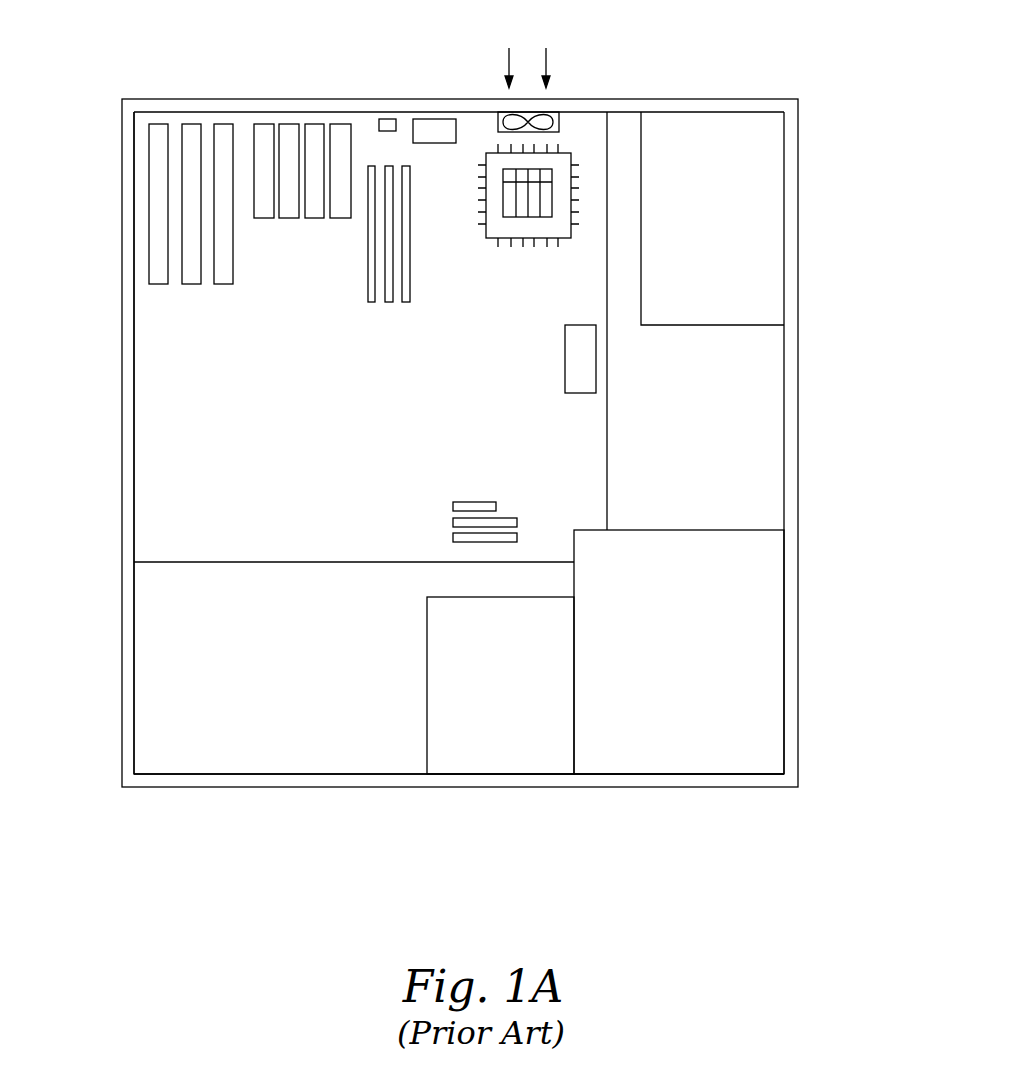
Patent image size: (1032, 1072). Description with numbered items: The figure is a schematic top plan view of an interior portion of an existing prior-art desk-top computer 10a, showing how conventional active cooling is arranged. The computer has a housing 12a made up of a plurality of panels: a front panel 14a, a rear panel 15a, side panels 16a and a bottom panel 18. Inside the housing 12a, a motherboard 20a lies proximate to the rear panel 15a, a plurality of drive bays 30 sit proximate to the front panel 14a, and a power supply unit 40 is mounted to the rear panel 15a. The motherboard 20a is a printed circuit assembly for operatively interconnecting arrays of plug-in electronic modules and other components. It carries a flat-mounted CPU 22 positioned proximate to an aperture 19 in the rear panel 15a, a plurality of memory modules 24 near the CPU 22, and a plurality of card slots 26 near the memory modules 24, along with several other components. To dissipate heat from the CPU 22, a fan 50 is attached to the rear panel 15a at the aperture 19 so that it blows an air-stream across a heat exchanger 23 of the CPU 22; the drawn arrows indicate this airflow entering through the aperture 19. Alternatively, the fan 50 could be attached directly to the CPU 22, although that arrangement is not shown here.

The desk-top computer 10a is at (812, 347).
The housing 12a is at (122, 787).
The front panel 14a is at (330, 780).
The rear panel 15a is at (442, 105).
The side panels 16a is at (127, 406).
The bottom panel 18 is at (262, 678).
The aperture 19 is at (560, 110).
The motherboard 20a is at (580, 457).
The flat-mounted CPU 22 is at (566, 220).
The heat exchanger 23 is at (550, 190).
The memory modules 24 is at (404, 168).
The card slots 26 is at (220, 132).
The drive bays 30 is at (537, 742).
The power supply unit 40 is at (758, 253).
The fan 50 is at (523, 117).